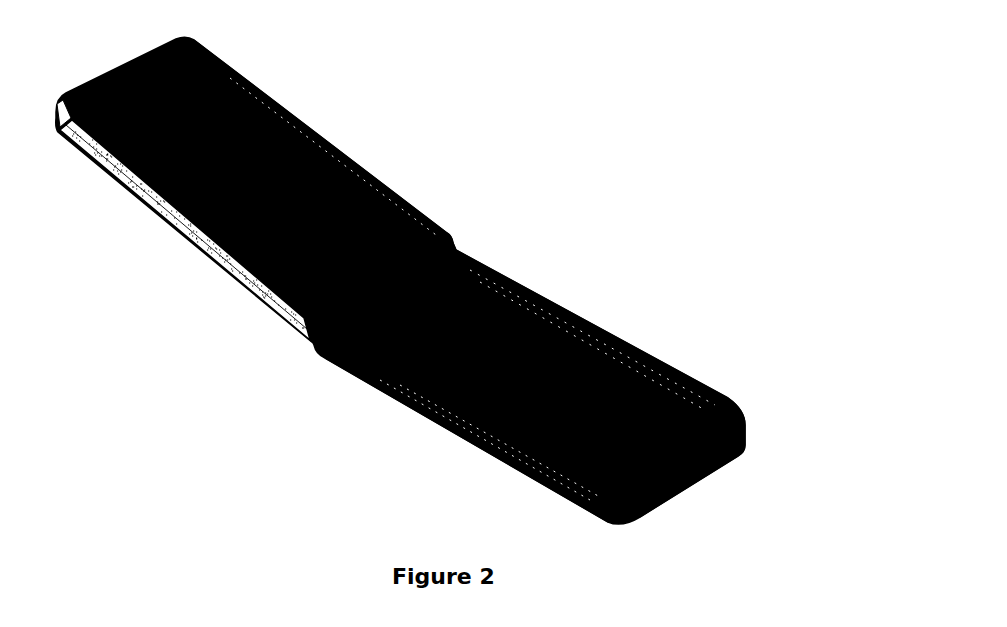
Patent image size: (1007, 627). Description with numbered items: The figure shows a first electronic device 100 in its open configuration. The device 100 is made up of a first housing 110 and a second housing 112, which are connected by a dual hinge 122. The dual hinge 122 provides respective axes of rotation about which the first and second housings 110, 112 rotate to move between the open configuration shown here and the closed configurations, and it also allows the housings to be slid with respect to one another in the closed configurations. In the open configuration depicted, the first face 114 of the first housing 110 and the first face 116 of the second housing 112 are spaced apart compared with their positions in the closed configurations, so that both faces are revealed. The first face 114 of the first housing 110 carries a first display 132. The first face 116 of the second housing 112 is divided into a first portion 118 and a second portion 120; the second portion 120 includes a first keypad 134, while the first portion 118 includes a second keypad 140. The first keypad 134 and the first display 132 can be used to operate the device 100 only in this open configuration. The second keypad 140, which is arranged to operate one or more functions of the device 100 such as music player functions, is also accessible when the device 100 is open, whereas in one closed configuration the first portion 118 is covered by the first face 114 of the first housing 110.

The first electronic device 100 is at (655, 67).
The first housing 110 is at (167, 227).
The second housing 112 is at (457, 434).
The first face of the first housing 114 is at (310, 126).
The first face of the second housing 116 is at (625, 337).
The first portion of the first face of the second housing 118 is at (731, 400).
The second portion of the first face of the second housing 120 is at (665, 358).
The dual hinge 122 is at (450, 237).
The first display 132 is at (253, 81).
The first keypad 134 is at (569, 303).
The second keypad 140 is at (703, 481).